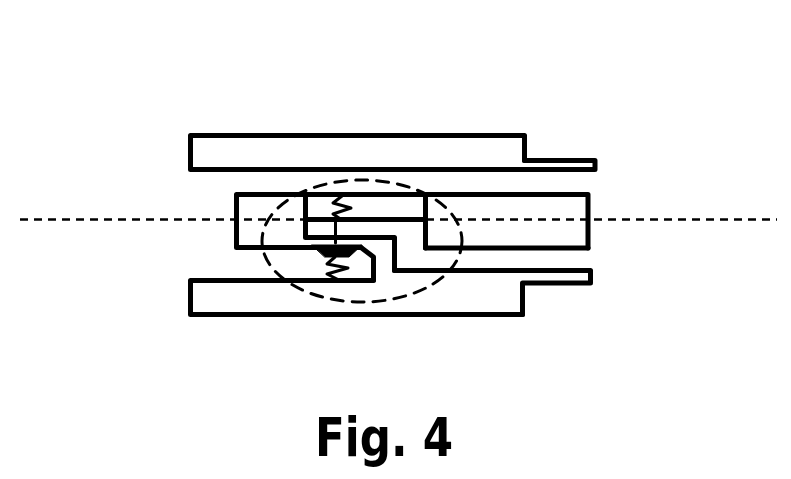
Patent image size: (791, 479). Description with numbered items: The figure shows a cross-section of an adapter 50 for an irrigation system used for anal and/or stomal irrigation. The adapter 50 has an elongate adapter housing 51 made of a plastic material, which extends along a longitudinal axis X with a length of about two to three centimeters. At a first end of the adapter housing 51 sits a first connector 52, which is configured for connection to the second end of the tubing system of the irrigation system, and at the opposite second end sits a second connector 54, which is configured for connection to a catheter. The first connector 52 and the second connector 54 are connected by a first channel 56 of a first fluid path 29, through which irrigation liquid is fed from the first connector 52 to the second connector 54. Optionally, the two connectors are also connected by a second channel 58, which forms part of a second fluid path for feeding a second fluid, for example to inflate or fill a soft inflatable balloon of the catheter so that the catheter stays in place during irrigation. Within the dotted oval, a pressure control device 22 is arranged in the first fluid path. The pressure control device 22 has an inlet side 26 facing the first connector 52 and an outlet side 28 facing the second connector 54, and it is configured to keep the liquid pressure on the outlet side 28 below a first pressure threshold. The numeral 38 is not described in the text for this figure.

The adapter 50 is at (137, 71).
The longitudinal axis X is at (80, 218).
The adapter housing 51 is at (473, 134).
The second connector 54 is at (580, 150).
The second channel 58 is at (275, 178).
The pressure control device 22 is at (367, 160).
The pivot / spring arrangement 38 is at (443, 278).
The inlet side 26 is at (243, 265).
The first connector 52 is at (190, 279).
The outlet side 28 is at (585, 259).
The first fluid path 29 is at (514, 313).
The first channel 56 is at (498, 258).